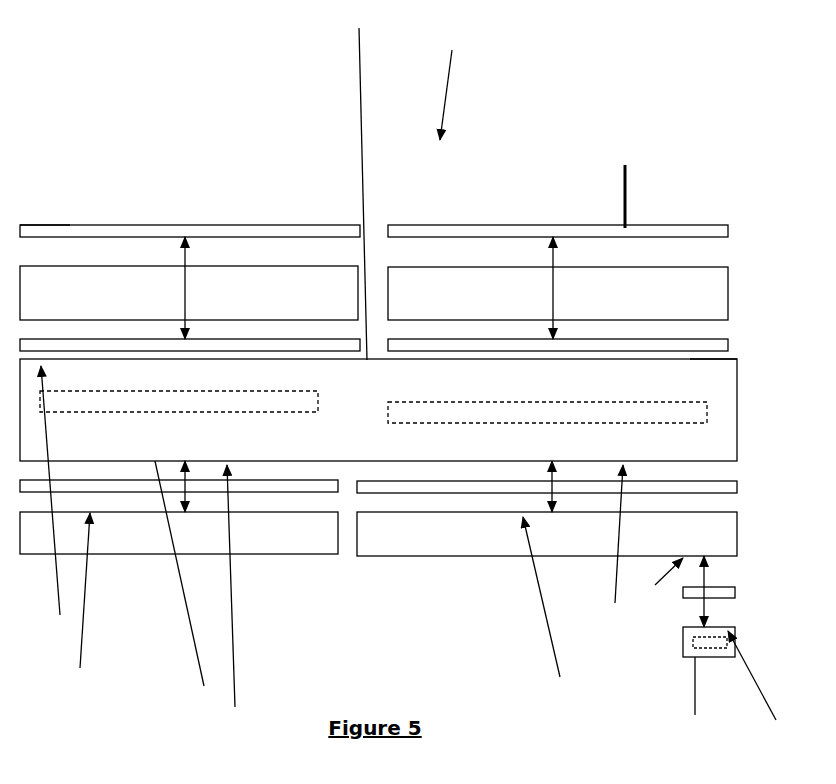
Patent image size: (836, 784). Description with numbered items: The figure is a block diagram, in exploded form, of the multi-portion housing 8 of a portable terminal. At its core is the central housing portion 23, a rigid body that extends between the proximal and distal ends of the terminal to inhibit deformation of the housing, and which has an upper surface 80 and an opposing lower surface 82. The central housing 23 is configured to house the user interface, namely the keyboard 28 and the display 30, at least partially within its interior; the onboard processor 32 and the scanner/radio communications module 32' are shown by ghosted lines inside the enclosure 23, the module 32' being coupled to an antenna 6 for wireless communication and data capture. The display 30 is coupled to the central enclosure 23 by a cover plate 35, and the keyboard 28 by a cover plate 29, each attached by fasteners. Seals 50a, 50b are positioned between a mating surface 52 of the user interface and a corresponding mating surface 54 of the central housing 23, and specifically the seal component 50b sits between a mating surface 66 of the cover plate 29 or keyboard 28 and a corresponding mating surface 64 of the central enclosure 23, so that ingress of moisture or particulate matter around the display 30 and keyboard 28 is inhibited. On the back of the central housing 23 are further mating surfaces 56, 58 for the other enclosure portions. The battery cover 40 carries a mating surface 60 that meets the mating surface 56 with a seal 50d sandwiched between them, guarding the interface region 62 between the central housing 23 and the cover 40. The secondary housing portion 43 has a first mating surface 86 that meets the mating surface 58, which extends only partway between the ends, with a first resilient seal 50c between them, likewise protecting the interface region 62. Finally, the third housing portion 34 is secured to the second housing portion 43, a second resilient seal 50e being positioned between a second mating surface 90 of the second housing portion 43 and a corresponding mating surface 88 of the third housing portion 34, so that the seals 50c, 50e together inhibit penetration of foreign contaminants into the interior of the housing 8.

The antenna 6 is at (703, 643).
The multi-portion housing 8 is at (440, 91).
The central housing portion 23 is at (378, 410).
The keyboard 28 is at (189, 293).
The cover plate 29 is at (268, 226).
The display 30 is at (558, 293).
The onboard processor 32 is at (185, 505).
The scanner/radio communications module 32' is at (521, 510).
The third housing portion 34 is at (704, 688).
The cover plate 35 is at (608, 192).
The battery cover 40 is at (179, 533).
The secondary housing portion 43 is at (547, 534).
The seal component 50a is at (490, 340).
The seal component 50b is at (115, 340).
The first resilient seal 50c is at (492, 482).
The seal 50d is at (133, 482).
The second resilient seal 50e is at (695, 596).
The mating surface 52 is at (656, 232).
The mating surface 54 is at (697, 359).
The mating surface 56 is at (247, 593).
The mating surface 58 is at (601, 542).
The mating surface 60 is at (91, 602).
The interface region 62 is at (246, 503).
The mating surface 64 is at (43, 498).
The mating surface 66 is at (50, 228).
The upper surface 80 is at (347, 186).
The lower surface 82 is at (179, 581).
The first mating surface 86 is at (541, 610).
The mating surface 88 is at (752, 689).
The second mating surface 90 is at (666, 591).